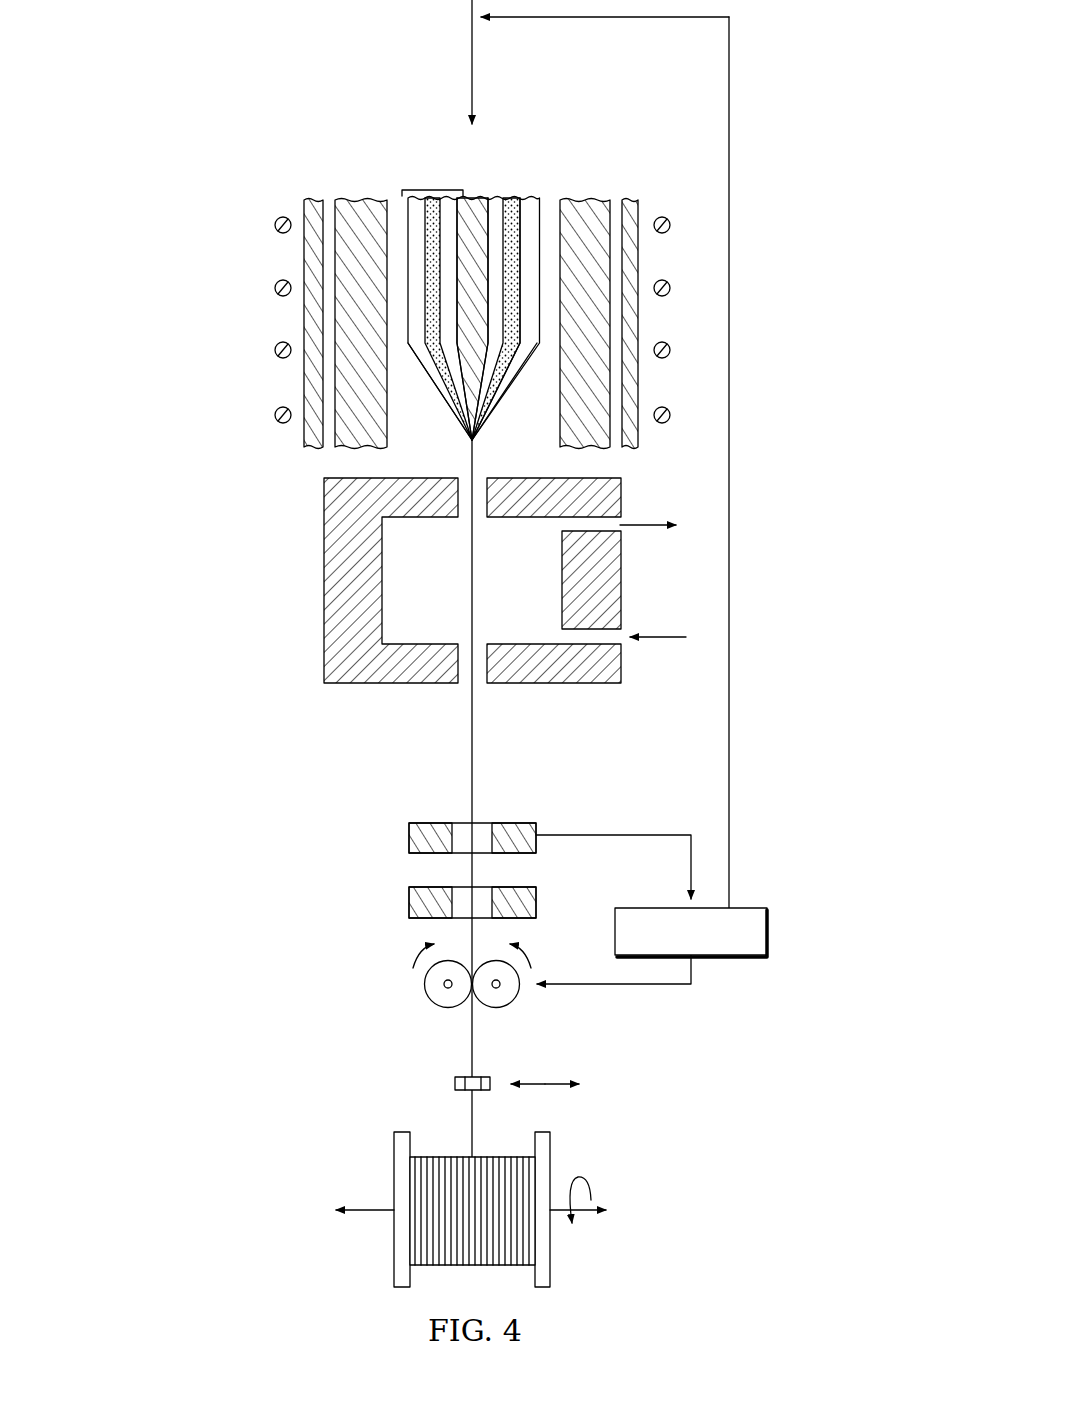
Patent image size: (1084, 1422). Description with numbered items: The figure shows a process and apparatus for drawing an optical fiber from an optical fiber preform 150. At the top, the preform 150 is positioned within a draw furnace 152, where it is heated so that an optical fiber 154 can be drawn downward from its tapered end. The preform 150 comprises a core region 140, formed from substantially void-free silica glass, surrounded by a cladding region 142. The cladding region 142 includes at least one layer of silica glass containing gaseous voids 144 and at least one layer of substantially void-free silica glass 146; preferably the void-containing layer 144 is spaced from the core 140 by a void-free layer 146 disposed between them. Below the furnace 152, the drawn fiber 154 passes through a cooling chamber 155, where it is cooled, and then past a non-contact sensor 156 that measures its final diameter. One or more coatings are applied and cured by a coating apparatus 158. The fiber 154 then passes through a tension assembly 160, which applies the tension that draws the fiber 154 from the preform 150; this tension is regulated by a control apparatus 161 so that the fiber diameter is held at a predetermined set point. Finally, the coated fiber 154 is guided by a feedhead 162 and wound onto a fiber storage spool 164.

The core region 140 is at (472, 197).
The cladding region 142 is at (431, 189).
The layer of silica glass containing gaseous voids 144 is at (522, 197).
The layer of substantially void-free silica glass 146 is at (507, 197).
The optical fiber preform 150 is at (418, 257).
The draw furnace 152 is at (317, 188).
The optical fiber 154 is at (473, 752).
The cooling chamber 155 is at (324, 574).
The non-contact sensor 156 is at (409, 838).
The coating apparatus 158 is at (409, 900).
The tension assembly 160 is at (425, 995).
The control apparatus 161 is at (736, 957).
The feedhead 162 is at (455, 1082).
The fiber storage spool 164 is at (394, 1178).